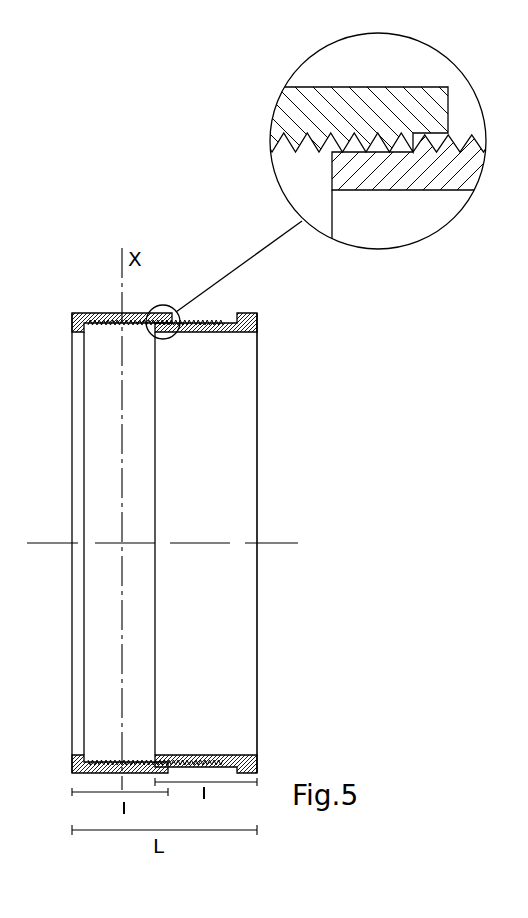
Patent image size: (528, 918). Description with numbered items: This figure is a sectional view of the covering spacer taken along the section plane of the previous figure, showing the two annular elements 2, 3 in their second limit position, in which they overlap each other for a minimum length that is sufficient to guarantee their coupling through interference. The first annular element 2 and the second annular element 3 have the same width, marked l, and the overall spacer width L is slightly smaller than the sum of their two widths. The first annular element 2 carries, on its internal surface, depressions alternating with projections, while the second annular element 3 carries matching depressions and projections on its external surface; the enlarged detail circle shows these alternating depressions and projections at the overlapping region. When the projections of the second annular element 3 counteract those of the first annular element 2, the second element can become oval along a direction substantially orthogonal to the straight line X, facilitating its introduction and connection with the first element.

The first annular element 2 is at (88, 266).
The second annular element 3 is at (219, 304).